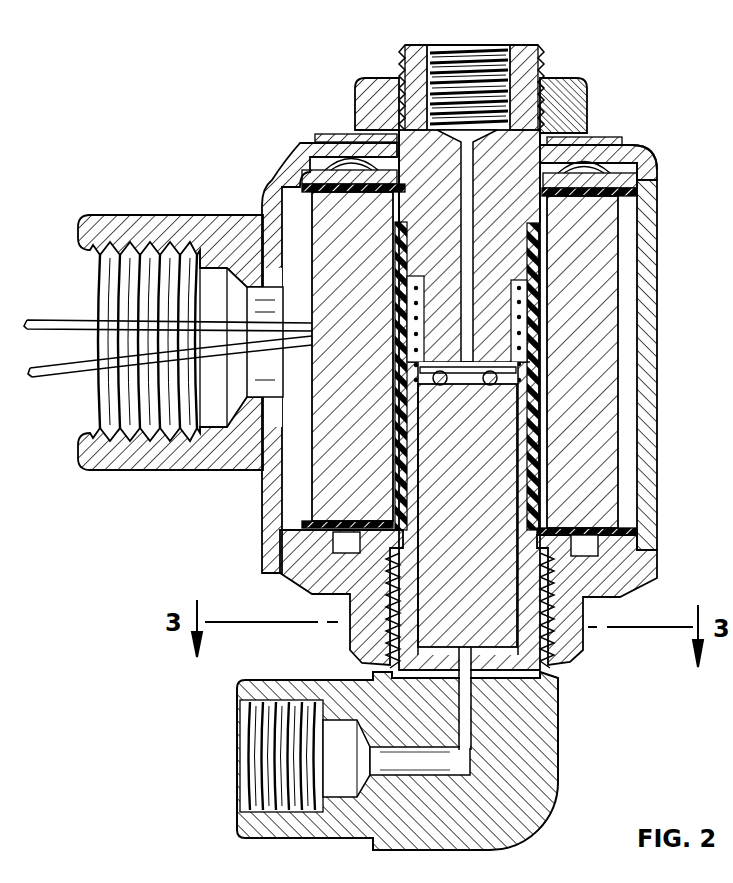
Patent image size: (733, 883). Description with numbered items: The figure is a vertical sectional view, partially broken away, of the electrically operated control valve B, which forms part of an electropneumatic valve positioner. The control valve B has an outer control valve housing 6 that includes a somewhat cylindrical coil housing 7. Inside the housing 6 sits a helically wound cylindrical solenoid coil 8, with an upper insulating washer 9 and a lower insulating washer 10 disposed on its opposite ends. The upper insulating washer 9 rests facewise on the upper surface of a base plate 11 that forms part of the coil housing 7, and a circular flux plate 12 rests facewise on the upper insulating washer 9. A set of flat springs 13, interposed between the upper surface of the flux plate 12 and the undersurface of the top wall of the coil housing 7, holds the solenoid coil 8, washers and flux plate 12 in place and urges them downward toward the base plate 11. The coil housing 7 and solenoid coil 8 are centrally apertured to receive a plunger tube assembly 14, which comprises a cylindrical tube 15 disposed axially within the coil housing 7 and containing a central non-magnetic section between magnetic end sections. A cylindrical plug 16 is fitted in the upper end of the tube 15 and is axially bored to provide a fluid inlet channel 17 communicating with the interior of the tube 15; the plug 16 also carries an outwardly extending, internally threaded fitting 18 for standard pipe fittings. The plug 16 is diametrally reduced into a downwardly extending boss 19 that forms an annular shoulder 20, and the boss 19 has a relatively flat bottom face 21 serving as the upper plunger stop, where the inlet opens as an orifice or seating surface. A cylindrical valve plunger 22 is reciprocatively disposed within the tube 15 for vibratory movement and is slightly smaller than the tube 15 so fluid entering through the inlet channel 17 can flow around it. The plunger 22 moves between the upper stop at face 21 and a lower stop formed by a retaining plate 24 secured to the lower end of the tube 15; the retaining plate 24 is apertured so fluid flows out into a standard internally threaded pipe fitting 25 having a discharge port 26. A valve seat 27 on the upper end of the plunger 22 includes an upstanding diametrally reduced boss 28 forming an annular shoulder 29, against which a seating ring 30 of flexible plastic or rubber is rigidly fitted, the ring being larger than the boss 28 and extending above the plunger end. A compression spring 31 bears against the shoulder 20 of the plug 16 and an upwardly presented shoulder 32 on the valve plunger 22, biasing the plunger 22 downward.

The control valve housing 6 is at (658, 517).
The coil housing 7 is at (660, 200).
The solenoid coil 8 is at (597, 462).
The upper insulating washer 9 is at (659, 175).
The lower insulating washer 10 is at (637, 533).
The base plate 11 is at (645, 584).
The flux plate 12 is at (652, 153).
The flat springs 13 is at (622, 140).
The plunger tube assembly 14 is at (553, 238).
The cylindrical tube 15 is at (543, 278).
The cylindrical plug 16 is at (498, 260).
The fluid inlet channel 17 is at (463, 197).
The fitting 18 is at (482, 64).
The boss 19 is at (544, 312).
The annular shoulder 20 is at (538, 293).
The bottom face 21 is at (519, 371).
The valve plunger 22 is at (550, 481).
The retaining plate 24 is at (548, 655).
The pipe fitting 25 is at (262, 777).
The discharge port 26 is at (409, 762).
The valve seat 27 is at (394, 398).
The boss 28 is at (455, 392).
The annular shoulder 29 is at (500, 400).
The seating ring 30 is at (520, 386).
The compression spring 31 is at (494, 325).
The shoulder 32 is at (292, 507).
The O-ring seal Q is at (497, 380).
The control valve B is at (569, 782).